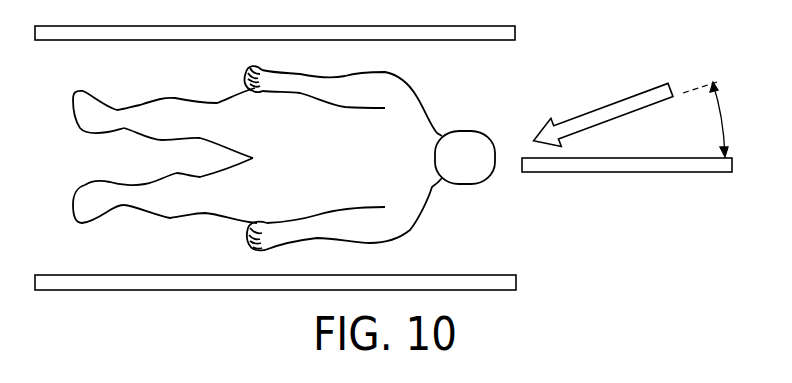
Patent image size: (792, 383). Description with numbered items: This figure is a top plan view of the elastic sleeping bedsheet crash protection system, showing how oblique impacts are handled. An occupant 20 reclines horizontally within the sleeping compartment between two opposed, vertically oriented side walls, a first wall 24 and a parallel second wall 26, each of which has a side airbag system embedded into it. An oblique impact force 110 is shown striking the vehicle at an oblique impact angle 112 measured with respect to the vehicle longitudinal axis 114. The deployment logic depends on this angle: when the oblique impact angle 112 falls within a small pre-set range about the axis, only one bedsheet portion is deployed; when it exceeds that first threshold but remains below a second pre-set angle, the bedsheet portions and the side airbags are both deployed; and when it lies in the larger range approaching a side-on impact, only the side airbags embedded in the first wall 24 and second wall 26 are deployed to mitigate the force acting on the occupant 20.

The occupant 20 is at (418, 182).
The first wall 24 is at (482, 33).
The second wall 26 is at (485, 282).
The oblique impact force 110 is at (657, 95).
The oblique impact angle 112 is at (718, 90).
The vehicle longitudinal axis 114 is at (693, 165).